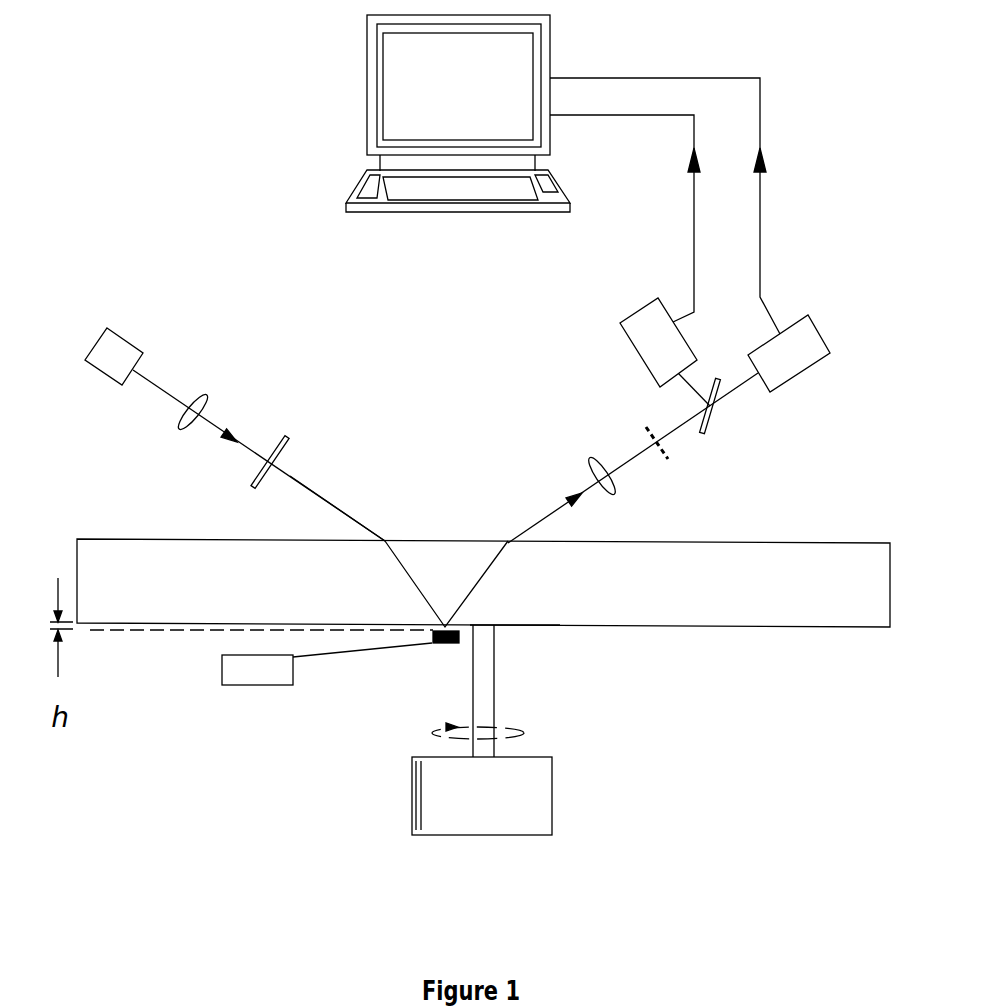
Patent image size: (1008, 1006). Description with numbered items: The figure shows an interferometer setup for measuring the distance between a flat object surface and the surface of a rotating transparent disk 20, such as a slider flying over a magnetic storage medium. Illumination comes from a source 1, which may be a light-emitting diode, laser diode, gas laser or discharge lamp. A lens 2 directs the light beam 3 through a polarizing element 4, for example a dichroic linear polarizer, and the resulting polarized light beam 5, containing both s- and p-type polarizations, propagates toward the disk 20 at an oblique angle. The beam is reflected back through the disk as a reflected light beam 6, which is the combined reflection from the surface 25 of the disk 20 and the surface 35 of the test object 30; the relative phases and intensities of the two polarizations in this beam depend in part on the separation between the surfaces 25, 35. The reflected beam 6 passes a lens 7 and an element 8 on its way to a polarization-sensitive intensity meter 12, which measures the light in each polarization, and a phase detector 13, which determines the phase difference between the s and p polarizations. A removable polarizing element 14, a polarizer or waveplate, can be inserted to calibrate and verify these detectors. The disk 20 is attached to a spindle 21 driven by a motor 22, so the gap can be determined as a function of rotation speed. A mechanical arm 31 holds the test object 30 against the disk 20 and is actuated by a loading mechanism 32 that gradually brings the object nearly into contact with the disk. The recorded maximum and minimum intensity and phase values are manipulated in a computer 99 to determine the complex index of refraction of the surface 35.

The source 1 is at (120, 335).
The lens 2 is at (164, 403).
The light beam 3 is at (185, 433).
The polarizing element 4 is at (253, 488).
The polarized light beam 5 is at (317, 507).
The reflected light beam 6 is at (558, 519).
The lens 7 is at (613, 495).
The beam splitter 8 is at (707, 440).
The polarization-sensitive intensity meter 12 is at (637, 358).
The phase detector 13 is at (820, 333).
The removable polarizing element 14 is at (667, 453).
The rotating transparent disk 20 is at (483, 583).
The spindle 21 is at (495, 695).
The motor 22 is at (552, 793).
The surface 25 is at (513, 627).
The test object 30 is at (440, 645).
The mechanical arm 31 is at (348, 653).
The loading mechanism 32 is at (248, 685).
The surface 35 is at (437, 630).
The computer 99 is at (367, 77).